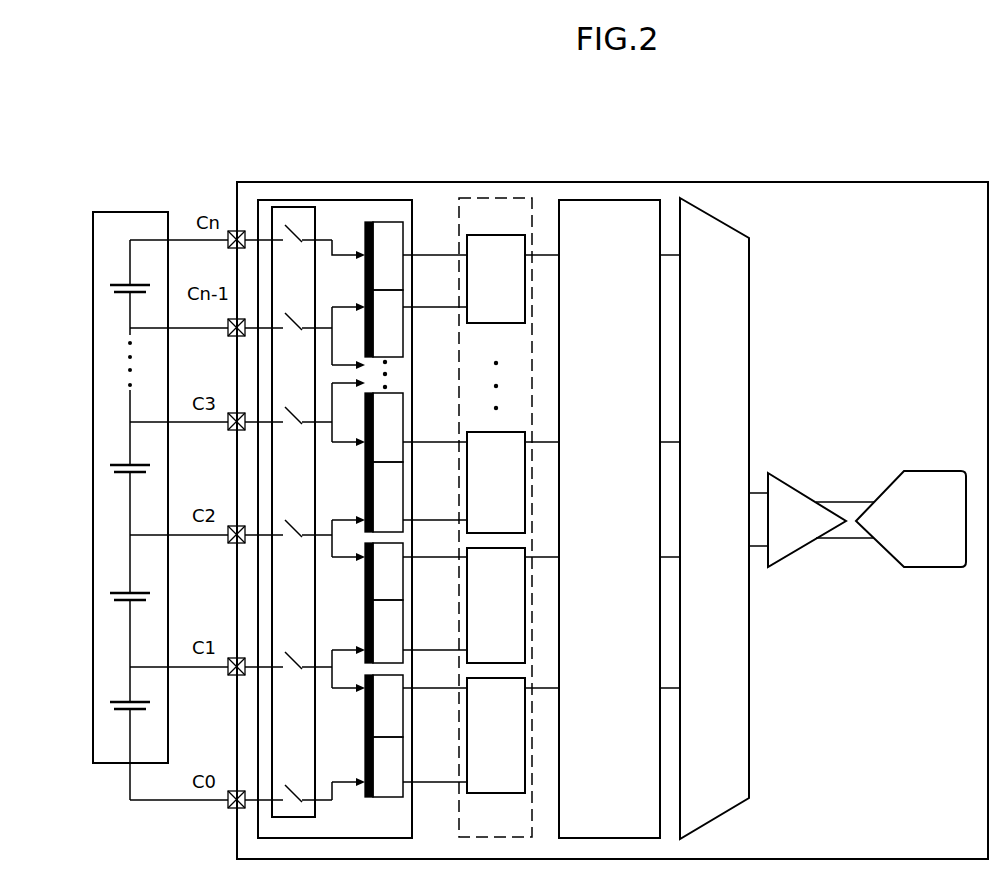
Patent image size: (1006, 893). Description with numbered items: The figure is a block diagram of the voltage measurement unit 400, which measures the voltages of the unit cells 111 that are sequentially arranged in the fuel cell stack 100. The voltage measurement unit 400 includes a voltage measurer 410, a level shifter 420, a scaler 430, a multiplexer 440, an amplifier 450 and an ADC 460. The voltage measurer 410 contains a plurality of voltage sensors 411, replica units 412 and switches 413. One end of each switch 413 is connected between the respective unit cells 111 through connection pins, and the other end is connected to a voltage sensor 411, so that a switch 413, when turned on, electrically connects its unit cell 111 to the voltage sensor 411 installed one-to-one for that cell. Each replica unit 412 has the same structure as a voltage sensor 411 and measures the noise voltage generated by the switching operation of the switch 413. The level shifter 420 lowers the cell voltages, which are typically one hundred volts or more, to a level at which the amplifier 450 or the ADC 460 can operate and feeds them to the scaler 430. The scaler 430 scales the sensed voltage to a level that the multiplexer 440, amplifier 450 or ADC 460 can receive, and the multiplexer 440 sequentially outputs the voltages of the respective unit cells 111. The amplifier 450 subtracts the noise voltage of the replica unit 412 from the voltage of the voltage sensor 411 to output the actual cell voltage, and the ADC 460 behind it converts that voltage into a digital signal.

The fuel cell stack 100 is at (145, 210).
The unit cell 111 is at (122, 284).
The voltage measurement unit 400 is at (848, 182).
The voltage measurer 410 is at (399, 200).
The voltage sensor 411 is at (398, 242).
The replica unit 412 is at (403, 323).
The switch 413 is at (293, 208).
The level shifter 420 is at (523, 198).
The scaler 430 is at (619, 198).
The multiplexer 440 is at (723, 223).
The amplifier 450 is at (791, 486).
The ADC 460 is at (937, 470).